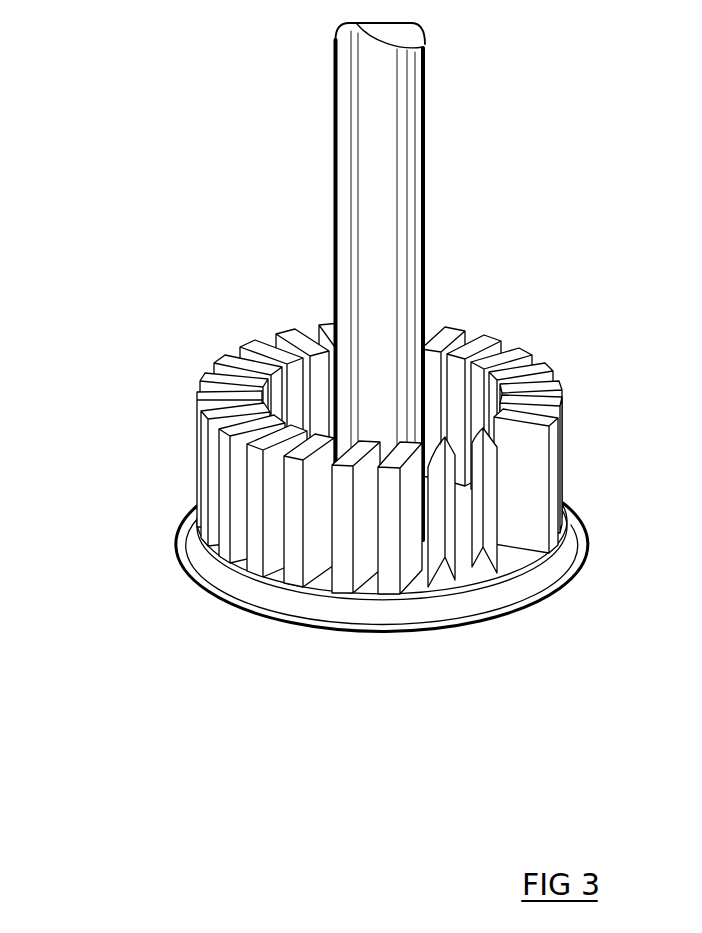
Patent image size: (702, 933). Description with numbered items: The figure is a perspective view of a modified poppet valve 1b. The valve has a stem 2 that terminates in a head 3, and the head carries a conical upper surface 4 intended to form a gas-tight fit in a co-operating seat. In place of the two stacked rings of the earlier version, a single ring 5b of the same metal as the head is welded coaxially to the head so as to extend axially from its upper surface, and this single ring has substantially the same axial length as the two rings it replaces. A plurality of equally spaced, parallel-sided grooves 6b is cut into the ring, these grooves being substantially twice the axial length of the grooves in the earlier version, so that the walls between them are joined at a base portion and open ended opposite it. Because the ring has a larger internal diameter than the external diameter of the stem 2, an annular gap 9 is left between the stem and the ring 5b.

The poppet valve 1b is at (228, 161).
The stem 2 is at (383, 185).
The head 3 is at (267, 598).
The conical upper surface 4 is at (195, 562).
The single ring 5b is at (220, 474).
The grooves 6b is at (422, 583).
The annular gap 9 is at (318, 385).